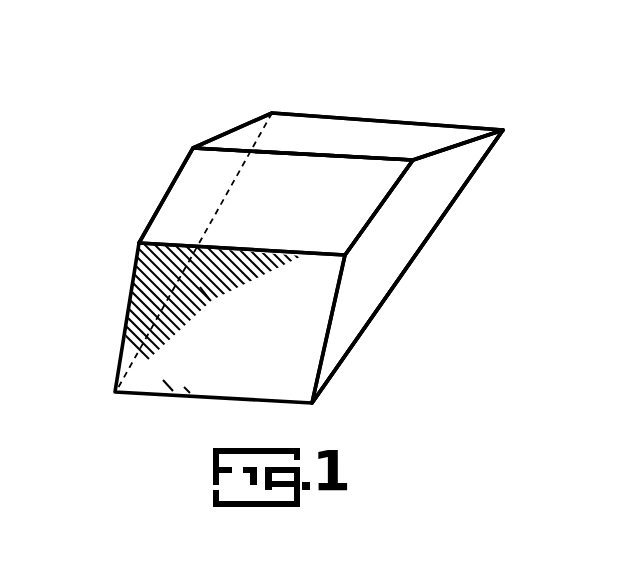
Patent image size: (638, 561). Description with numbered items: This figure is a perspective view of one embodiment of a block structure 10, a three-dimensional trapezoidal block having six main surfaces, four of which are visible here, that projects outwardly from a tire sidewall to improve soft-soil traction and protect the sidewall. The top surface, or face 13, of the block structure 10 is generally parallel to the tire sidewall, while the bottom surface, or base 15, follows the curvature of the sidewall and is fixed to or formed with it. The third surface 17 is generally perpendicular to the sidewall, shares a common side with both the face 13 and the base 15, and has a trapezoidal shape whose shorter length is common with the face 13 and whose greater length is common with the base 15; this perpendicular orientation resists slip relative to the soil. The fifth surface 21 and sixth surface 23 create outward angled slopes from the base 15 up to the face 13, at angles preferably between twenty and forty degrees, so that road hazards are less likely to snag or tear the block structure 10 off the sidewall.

The block structure 10 is at (210, 91).
The face 13 is at (217, 182).
The base 15 is at (377, 262).
The third surface 17 is at (415, 217).
The fifth surface 21 is at (387, 131).
The sixth surface 23 is at (200, 329).